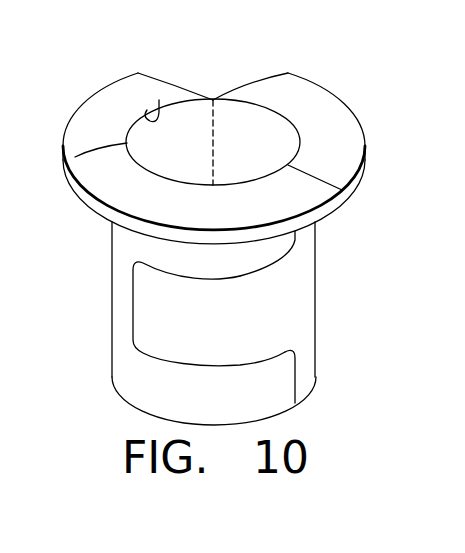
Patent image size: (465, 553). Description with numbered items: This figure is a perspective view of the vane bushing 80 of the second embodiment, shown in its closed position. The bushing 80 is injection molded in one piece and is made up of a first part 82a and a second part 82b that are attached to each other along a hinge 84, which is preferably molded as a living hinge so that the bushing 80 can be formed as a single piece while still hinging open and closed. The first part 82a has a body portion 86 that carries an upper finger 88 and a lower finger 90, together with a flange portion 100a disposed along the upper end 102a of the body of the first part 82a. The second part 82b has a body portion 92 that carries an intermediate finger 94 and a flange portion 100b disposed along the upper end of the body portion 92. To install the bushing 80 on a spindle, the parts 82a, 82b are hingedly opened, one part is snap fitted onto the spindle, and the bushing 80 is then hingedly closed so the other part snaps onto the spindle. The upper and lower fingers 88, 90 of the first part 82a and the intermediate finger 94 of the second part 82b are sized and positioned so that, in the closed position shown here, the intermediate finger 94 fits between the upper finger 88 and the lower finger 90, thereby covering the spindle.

The bushing 80 is at (377, 80).
The first part 82a is at (88, 108).
The second part 82b is at (353, 132).
The hinge 84 is at (213, 130).
The body portion 86 is at (111, 307).
The upper finger 88 is at (287, 253).
The lower finger 90 is at (287, 395).
The body portion 92 is at (316, 298).
The intermediate finger 94 is at (137, 329).
The flange portion 100a is at (127, 143).
The flange portion 100b is at (292, 78).
The upper end 102a is at (159, 100).